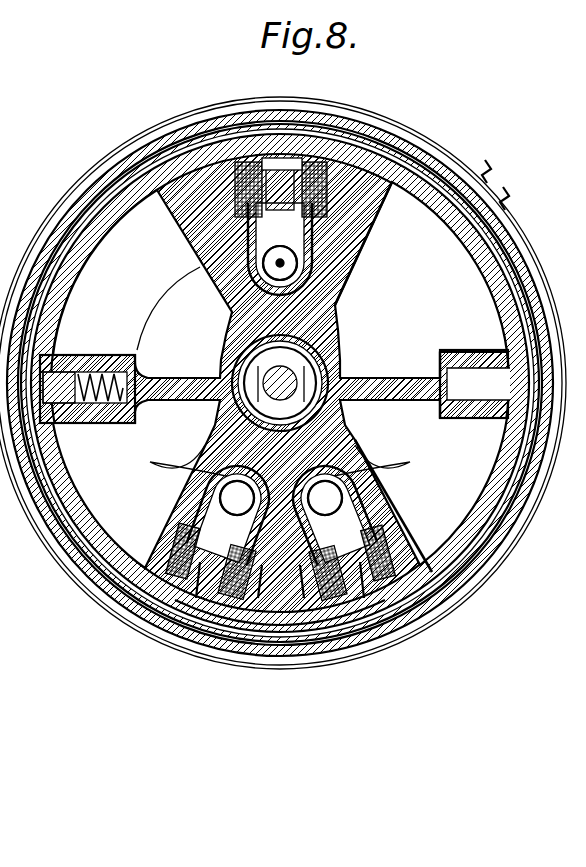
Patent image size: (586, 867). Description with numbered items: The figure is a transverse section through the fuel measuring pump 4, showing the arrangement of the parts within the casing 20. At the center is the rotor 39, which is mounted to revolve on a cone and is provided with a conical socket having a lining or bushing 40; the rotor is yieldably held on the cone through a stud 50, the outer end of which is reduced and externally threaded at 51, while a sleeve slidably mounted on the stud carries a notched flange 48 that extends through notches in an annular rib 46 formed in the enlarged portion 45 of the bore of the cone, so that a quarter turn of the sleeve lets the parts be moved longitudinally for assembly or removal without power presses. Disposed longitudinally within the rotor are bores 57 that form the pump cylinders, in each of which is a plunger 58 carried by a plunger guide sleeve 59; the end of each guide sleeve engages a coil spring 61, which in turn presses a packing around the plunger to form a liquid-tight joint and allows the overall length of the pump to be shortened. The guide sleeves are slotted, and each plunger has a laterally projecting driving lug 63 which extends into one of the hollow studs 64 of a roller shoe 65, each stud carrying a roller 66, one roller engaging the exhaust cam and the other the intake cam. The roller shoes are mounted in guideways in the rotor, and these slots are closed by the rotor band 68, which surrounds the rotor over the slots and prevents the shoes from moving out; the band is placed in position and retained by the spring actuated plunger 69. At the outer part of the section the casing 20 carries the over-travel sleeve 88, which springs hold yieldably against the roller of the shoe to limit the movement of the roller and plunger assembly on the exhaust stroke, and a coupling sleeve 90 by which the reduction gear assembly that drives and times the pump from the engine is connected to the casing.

The measuring pump 4 is at (512, 240).
The casing 20 is at (533, 262).
The rotor 39 is at (372, 222).
The lining or bushing 40 is at (338, 322).
The enlarged portion of bore 45 is at (352, 376).
The annular rib 46 is at (237, 318).
The notched flange 48 is at (348, 352).
The stud 50 is at (266, 376).
The externally threaded end 51 is at (205, 482).
The bores 57 is at (298, 264).
The plungers 58 is at (252, 258).
The plunger guide sleeves 59 is at (312, 270).
The coil spring 61 is at (178, 154).
The driving lug 63 is at (298, 158).
The hollow studs 64 is at (246, 172).
The roller shoe 65 is at (405, 145).
The roller 66 is at (352, 135).
The rotor band 68 is at (92, 260).
The spring actuated plunger 69 is at (75, 357).
The over-travel sleeve 88 is at (466, 162).
The coupling sleeve 90 is at (492, 205).